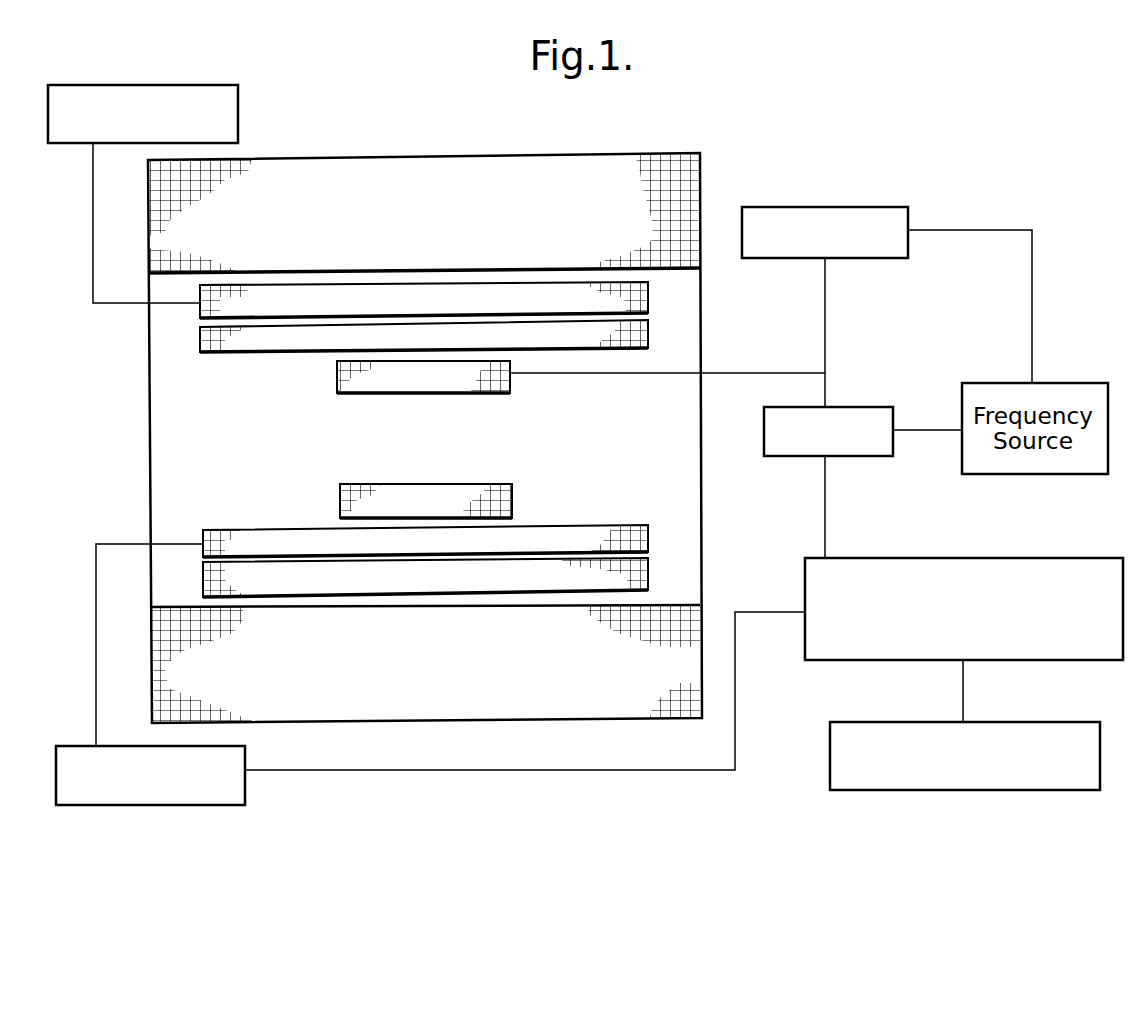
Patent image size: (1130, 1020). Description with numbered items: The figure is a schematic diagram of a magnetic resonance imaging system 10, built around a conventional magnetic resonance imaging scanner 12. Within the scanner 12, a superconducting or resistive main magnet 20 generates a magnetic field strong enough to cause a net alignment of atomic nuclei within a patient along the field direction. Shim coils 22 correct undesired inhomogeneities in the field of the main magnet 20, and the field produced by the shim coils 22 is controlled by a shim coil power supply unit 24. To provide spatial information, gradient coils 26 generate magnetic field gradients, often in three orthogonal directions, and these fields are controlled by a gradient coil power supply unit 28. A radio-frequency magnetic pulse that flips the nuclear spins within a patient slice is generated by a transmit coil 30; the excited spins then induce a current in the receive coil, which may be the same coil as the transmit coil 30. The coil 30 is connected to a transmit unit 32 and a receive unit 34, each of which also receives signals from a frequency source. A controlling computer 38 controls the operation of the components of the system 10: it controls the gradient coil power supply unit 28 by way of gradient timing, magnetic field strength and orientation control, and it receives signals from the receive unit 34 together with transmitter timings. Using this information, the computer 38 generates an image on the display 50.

The magnetic resonance imaging system 10 is at (805, 148).
The magnetic resonance imaging scanner 12 is at (167, 437).
The main magnet 20 is at (652, 160).
The shim coils 22 is at (645, 297).
The shim coil power supply unit 24 is at (222, 95).
The gradient coils 26 is at (277, 537).
The gradient coil power supply unit 28 is at (230, 790).
The transmit coil 30 is at (423, 383).
The transmit unit 32 is at (875, 248).
The receive unit 34 is at (868, 412).
The controlling computer 38 is at (1100, 558).
The display 50 is at (1057, 728).